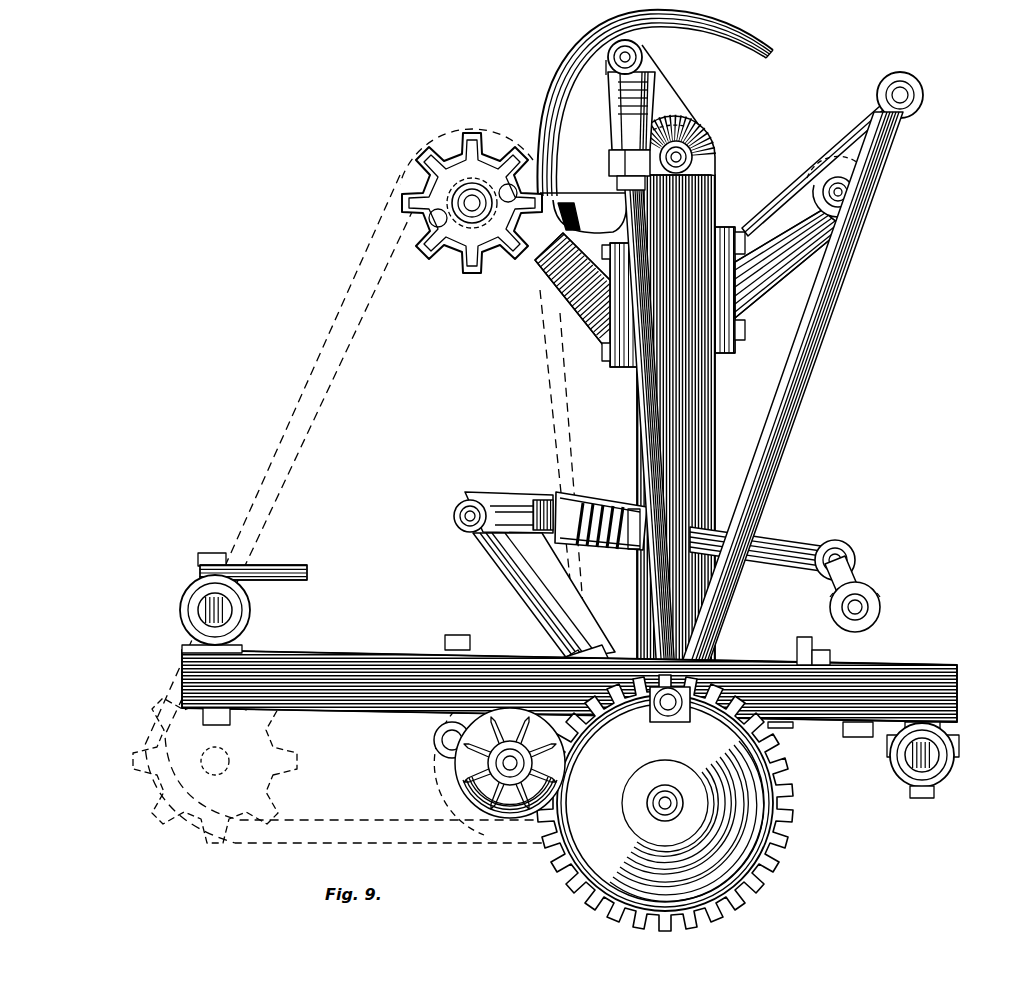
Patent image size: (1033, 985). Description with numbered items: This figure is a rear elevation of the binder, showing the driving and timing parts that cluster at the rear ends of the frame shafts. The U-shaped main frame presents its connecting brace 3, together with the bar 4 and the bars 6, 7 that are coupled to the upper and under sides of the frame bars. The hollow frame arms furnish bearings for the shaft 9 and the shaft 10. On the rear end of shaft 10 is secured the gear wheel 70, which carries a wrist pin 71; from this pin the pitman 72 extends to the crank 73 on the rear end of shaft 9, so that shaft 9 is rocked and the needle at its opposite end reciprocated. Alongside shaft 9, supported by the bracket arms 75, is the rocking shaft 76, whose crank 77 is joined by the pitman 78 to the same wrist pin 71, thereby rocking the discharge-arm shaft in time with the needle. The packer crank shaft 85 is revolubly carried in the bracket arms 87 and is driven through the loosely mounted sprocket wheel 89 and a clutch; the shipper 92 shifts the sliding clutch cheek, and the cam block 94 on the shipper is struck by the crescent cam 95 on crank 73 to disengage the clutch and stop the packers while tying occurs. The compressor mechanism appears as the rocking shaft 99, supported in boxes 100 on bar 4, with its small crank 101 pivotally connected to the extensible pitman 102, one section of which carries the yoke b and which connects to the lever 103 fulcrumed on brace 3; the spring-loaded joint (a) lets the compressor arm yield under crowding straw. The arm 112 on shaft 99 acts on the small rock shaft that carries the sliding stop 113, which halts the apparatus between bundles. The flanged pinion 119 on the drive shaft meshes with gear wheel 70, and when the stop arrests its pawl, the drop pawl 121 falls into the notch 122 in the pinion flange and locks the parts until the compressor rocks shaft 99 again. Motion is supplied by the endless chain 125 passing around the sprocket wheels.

The crescent cam 95 is at (655, 103).
The crank 73 is at (668, 97).
The shaft 9 is at (692, 150).
The cam block 94 is at (562, 197).
The crank shaft 85 is at (472, 203).
The sprocket wheel 89 is at (468, 220).
The shipper 92 is at (473, 248).
The bracket arms 87 is at (547, 275).
The crank 77 is at (869, 131).
The rocking shaft 76 is at (856, 196).
The bracket arms 75 is at (773, 276).
The pitman 78 is at (788, 400).
The pitman 72 is at (627, 413).
The connecting brace 3 is at (705, 413).
The endless chain 125 is at (287, 462).
The yoke b is at (601, 514).
The spring a is at (608, 541).
The pitman 102 is at (772, 551).
The lever 103 is at (522, 578).
The bar 6 is at (250, 608).
The drop pawl 121 is at (525, 683).
The arm 112 is at (840, 642).
The crank 101 is at (863, 588).
The rocking shaft 99 is at (872, 624).
The boxes 100 is at (882, 646).
The sliding stop 113 is at (445, 742).
The flanged pinion 119 is at (458, 770).
The notch 122 is at (542, 692).
The wrist pin 71 is at (675, 723).
The bar 4 is at (818, 712).
The shaft 10 is at (662, 797).
The gear wheel 70 is at (650, 857).
The bar 7 is at (898, 770).